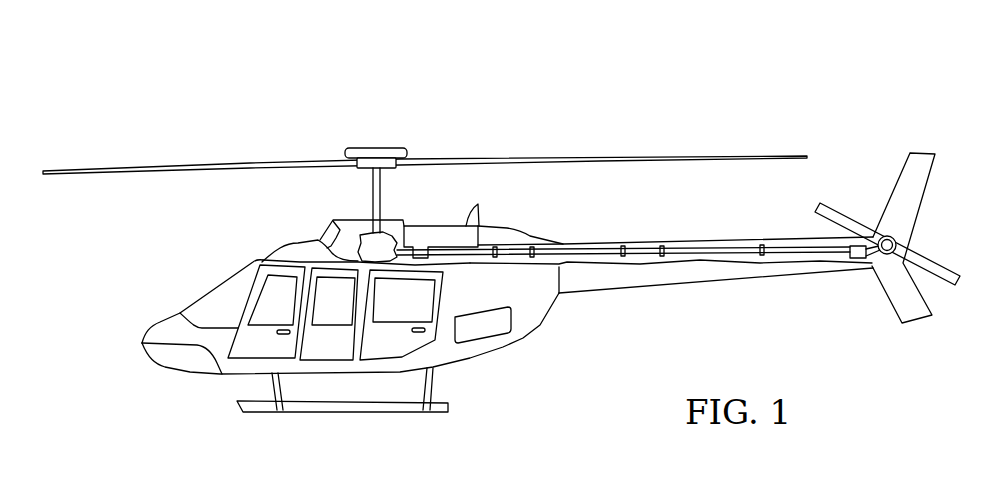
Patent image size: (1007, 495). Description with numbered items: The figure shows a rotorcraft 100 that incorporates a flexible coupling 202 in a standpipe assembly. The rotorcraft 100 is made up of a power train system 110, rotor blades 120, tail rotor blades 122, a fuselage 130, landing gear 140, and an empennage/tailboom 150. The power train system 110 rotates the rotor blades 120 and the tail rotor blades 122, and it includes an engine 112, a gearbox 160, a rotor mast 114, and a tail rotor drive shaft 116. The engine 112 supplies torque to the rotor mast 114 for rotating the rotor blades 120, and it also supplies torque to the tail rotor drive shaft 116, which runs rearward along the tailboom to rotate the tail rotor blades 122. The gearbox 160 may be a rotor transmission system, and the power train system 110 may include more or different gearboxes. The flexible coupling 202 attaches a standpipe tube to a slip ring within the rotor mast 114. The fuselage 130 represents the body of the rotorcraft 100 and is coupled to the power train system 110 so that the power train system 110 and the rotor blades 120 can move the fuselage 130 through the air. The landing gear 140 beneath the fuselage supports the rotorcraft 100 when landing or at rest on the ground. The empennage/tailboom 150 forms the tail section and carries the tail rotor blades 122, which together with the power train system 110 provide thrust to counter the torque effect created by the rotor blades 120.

The rotorcraft 100 is at (229, 89).
The power train system 110 is at (399, 133).
The engine 112 is at (493, 227).
The rotor mast 114 is at (372, 208).
The tail rotor drive shaft 116 is at (713, 248).
The rotor blades 120 is at (638, 156).
The tail rotor blades 122 is at (845, 211).
The fuselage 130 is at (485, 358).
The landing gear 140 is at (265, 413).
The empennage/tailboom 150 is at (647, 283).
The gearbox 160 is at (357, 248).
The flexible coupling 202 is at (381, 180).